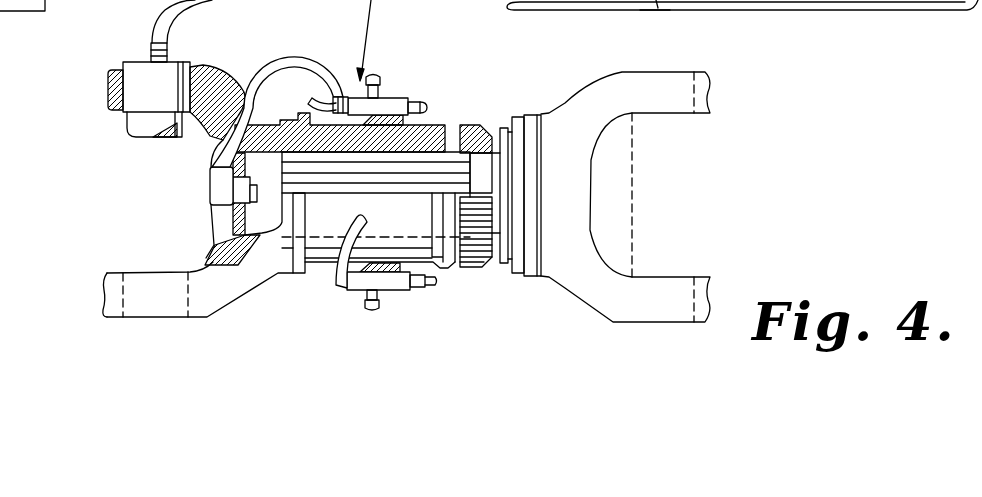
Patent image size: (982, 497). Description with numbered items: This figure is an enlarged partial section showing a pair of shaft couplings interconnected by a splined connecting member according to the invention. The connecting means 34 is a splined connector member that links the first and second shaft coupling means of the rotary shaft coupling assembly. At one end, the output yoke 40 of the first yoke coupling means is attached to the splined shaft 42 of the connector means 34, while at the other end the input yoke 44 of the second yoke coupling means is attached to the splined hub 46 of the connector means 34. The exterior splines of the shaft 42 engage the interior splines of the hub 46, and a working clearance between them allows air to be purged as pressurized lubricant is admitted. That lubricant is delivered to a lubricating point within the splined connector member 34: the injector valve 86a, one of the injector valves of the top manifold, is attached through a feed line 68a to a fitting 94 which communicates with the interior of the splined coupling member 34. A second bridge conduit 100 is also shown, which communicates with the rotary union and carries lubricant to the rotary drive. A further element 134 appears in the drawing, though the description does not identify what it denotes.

The connecting means 34 is at (379, 208).
The output yoke 40 is at (700, 72).
The splined shaft 42 is at (437, 167).
The input yoke 44 is at (223, 70).
The splined hub 46 is at (327, 250).
The feed line 68a is at (320, 58).
The injector valve 86a is at (389, 96).
The fitting 94 is at (232, 208).
The second bridge conduit 100 is at (545, 11).
The frame bracket 134 is at (645, 5).